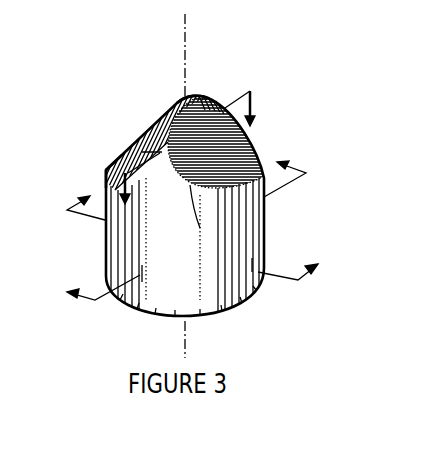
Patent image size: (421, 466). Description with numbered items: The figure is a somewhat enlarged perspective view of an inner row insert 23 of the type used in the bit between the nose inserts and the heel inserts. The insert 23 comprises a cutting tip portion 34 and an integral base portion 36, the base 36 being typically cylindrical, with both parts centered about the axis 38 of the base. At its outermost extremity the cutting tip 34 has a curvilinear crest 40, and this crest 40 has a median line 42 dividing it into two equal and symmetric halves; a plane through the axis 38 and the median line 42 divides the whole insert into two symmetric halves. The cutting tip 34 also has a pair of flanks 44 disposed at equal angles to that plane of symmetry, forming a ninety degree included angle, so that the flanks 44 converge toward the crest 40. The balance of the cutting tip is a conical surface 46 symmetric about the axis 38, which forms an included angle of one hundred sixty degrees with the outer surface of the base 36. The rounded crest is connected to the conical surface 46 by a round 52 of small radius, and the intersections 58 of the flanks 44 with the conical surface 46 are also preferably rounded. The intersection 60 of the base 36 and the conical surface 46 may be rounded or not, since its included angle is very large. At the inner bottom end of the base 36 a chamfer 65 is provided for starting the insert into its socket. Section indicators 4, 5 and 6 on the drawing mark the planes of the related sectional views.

The insert 23 is at (253, 79).
The cutting tip portion 34 is at (107, 157).
The base portion 36 is at (220, 276).
The axis 38 is at (185, 33).
The curvilinear crest 40 is at (174, 100).
The median line 42 is at (213, 97).
The flanks 44 is at (125, 135).
The conical surface 46 is at (153, 166).
The round 52 is at (148, 128).
The intersections of flanks with conical surface 58 is at (117, 148).
The intersection of base and conical surface 60 is at (108, 180).
The chamfer 65 is at (144, 306).
The section line 4- 4 is at (181, 228).
The section line 5- 5 is at (199, 234).
The section line 6- 6 is at (194, 156).